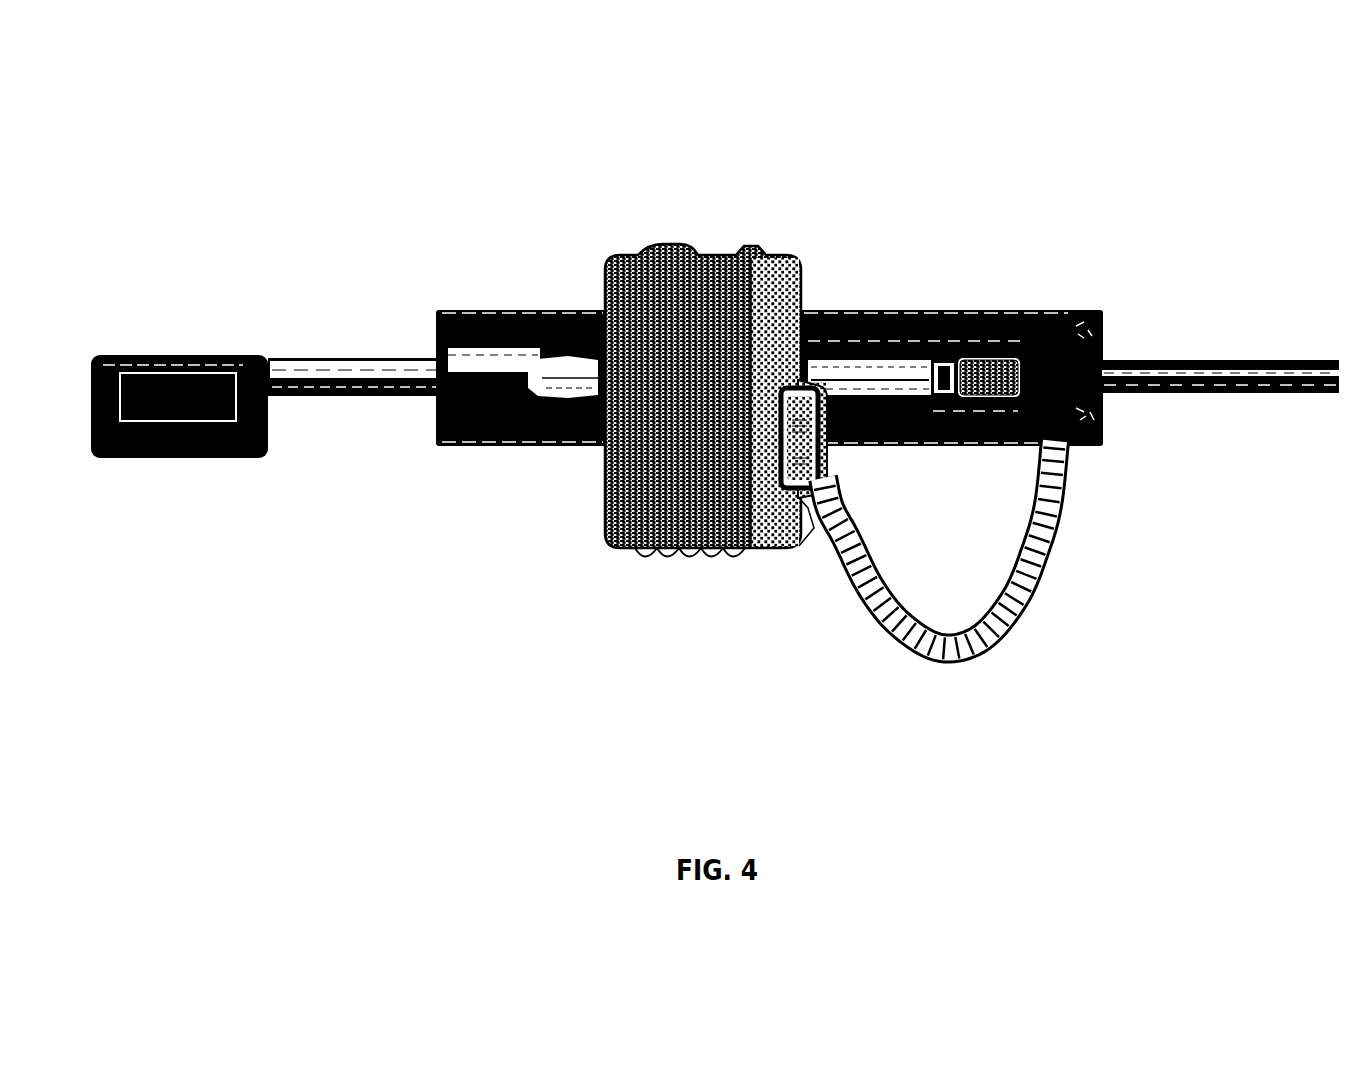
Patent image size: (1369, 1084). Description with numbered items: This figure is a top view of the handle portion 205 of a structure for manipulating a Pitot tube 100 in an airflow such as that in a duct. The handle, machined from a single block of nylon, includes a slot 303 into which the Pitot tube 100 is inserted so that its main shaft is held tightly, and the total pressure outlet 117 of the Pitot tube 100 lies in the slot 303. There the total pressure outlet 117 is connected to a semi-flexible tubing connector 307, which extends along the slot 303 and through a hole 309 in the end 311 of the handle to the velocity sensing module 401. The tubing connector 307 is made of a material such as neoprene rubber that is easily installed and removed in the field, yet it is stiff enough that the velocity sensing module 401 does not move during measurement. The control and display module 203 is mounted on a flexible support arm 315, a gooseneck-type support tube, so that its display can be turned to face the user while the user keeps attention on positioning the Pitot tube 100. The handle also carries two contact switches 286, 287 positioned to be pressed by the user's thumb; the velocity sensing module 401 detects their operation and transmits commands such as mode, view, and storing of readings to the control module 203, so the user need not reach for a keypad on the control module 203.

The Pitot tube 100 is at (1280, 363).
The total pressure outlet 117 is at (947, 303).
The control and display module 203 is at (717, 318).
The handle portion 205 is at (637, 657).
The contact switch 286 is at (1090, 298).
The contact switch 287 is at (1093, 410).
The slot 303 is at (990, 335).
The semi-flexible tubing connector 307 is at (348, 367).
The hole 309 is at (428, 405).
The end 311 is at (454, 362).
The flexible support arm 315 is at (1000, 597).
The velocity sensing module 401 is at (198, 347).